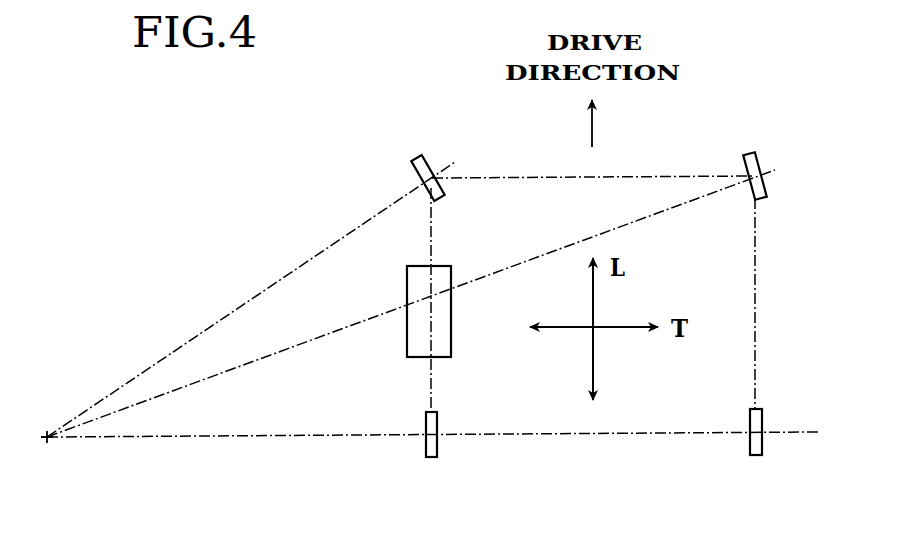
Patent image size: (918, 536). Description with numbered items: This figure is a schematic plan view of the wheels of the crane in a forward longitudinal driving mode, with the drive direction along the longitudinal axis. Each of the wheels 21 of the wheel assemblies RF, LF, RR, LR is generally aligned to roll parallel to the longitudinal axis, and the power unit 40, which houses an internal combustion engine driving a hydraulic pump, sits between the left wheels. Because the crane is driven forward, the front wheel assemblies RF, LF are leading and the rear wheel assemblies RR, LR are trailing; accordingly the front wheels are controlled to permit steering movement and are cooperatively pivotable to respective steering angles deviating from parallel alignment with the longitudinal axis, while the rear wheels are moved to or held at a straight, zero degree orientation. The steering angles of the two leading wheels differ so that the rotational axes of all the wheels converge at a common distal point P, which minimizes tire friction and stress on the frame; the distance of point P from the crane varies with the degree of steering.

The wheels 21 is at (600, 306).
The power unit 40 is at (415, 335).
The left front wheel assembly LF is at (404, 158).
The right front wheel assembly RF is at (772, 159).
The left rear wheel assembly LR is at (419, 448).
The right rear wheel assembly RR is at (809, 463).
The common distal point P is at (35, 437).